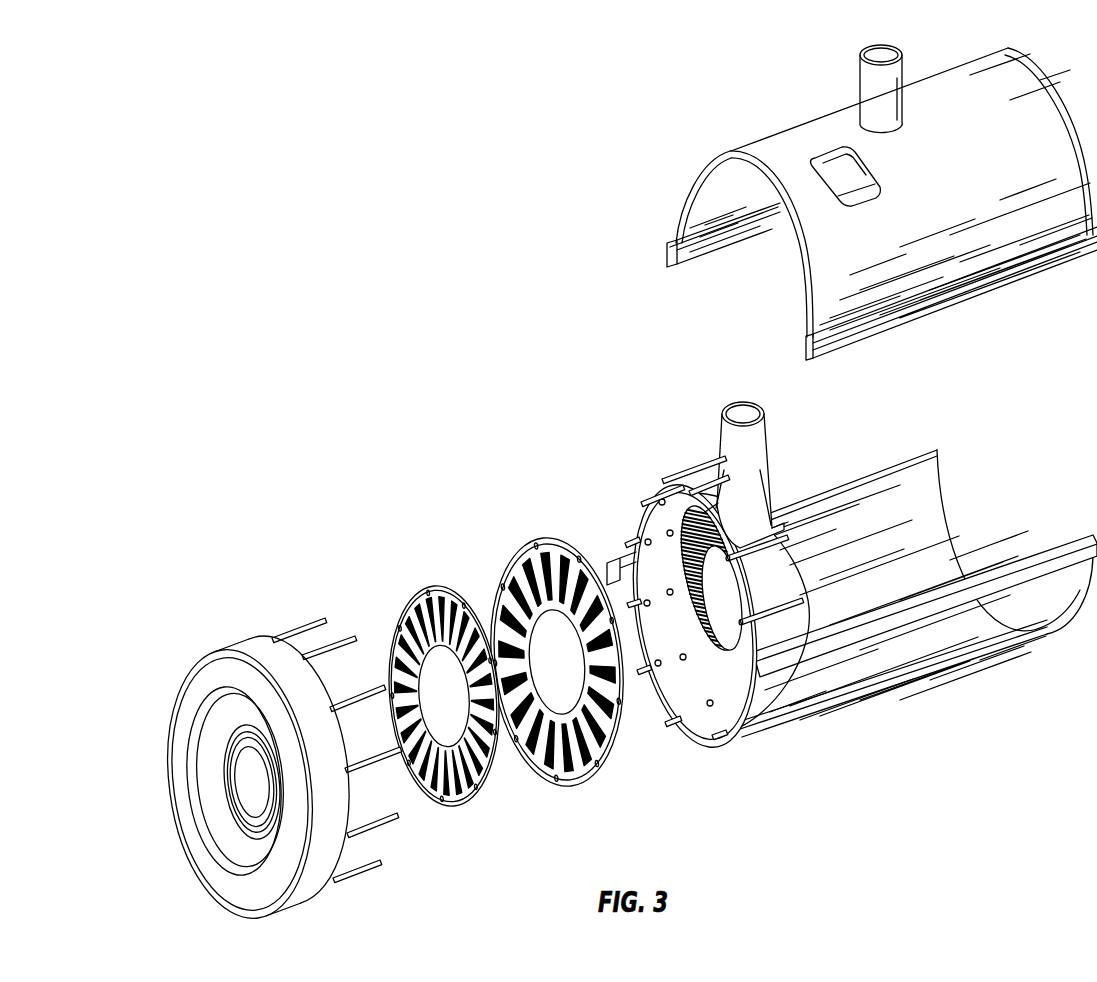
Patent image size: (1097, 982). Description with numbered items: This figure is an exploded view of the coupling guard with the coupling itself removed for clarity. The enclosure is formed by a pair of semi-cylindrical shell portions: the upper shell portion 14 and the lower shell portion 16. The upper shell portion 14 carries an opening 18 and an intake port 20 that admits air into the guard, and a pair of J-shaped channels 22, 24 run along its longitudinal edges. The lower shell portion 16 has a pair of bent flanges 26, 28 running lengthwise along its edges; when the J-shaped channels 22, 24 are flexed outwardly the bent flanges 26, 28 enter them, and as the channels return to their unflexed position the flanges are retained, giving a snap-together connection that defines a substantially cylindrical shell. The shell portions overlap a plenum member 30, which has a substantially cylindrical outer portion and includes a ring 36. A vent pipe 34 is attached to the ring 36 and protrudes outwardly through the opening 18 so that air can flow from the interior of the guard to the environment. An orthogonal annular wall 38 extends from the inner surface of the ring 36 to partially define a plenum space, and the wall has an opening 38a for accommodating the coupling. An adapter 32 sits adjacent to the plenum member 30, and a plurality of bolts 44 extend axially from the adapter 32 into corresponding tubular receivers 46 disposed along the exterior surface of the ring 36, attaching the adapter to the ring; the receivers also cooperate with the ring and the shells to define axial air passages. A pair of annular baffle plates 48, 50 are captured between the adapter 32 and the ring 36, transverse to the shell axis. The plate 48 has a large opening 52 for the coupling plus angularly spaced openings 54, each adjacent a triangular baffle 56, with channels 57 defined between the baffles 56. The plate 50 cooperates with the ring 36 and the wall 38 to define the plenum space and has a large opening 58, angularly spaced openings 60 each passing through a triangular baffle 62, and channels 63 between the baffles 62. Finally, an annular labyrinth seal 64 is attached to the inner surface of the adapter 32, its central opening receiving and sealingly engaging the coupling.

The upper shell portion 14 is at (968, 189).
The lower shell portion 16 is at (877, 657).
The opening 18 is at (857, 160).
The intake port 20 is at (880, 58).
The J-shaped channel 22 is at (818, 354).
The J-shaped channel 24 is at (670, 246).
The bent flange 26 is at (1073, 537).
The bent flange 28 is at (937, 448).
The plenum member 30 is at (708, 452).
The adapter 32 is at (333, 797).
The vent pipe 34 is at (752, 473).
The ring 36 is at (785, 599).
The orthogonal annular wall 38 is at (696, 624).
The opening 38a is at (703, 648).
The bolts 44 is at (307, 622).
The tubular receivers 46 is at (690, 477).
The annular baffle plate 48 is at (466, 812).
The annular baffle plate 50 is at (588, 784).
The large opening 52 is at (393, 633).
The angularly spaced openings 54 is at (408, 600).
The triangular baffle 56 is at (393, 687).
The channels 57 is at (418, 773).
The large opening 58 is at (497, 597).
The angularly spaced openings 60 is at (513, 560).
The triangular baffle 62 is at (563, 540).
The channels 63 is at (552, 780).
The annular labyrinth seal 64 is at (260, 850).